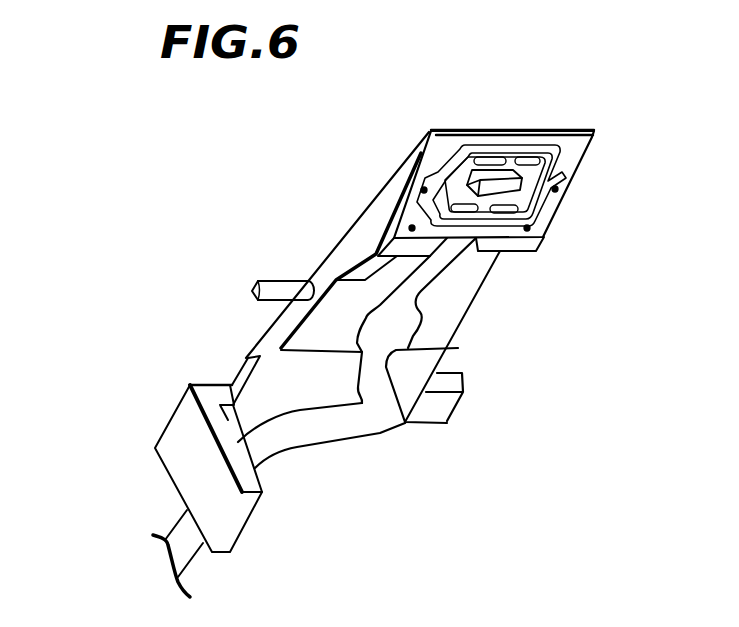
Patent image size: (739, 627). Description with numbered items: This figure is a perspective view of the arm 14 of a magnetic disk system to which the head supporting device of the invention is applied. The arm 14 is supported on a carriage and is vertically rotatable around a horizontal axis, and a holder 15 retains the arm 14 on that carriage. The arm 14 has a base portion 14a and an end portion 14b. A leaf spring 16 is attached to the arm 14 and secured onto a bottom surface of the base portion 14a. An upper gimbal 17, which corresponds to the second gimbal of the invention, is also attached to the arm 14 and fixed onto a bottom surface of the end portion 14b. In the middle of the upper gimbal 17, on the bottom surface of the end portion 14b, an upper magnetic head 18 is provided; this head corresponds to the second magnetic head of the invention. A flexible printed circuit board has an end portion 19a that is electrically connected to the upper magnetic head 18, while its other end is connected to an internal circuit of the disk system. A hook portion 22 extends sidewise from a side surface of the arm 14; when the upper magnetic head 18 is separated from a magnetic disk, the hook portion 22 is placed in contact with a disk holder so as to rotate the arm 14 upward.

The arm 14 is at (341, 216).
The base portion 14a is at (267, 355).
The end portion 14b is at (423, 155).
The holder 15 is at (223, 352).
The leaf spring 16 is at (432, 363).
The upper gimbal 17 is at (550, 153).
The upper magnetic head 18 is at (507, 172).
The end portion of flexible printed circuit board 19a is at (452, 262).
The hook portion 22 is at (289, 280).